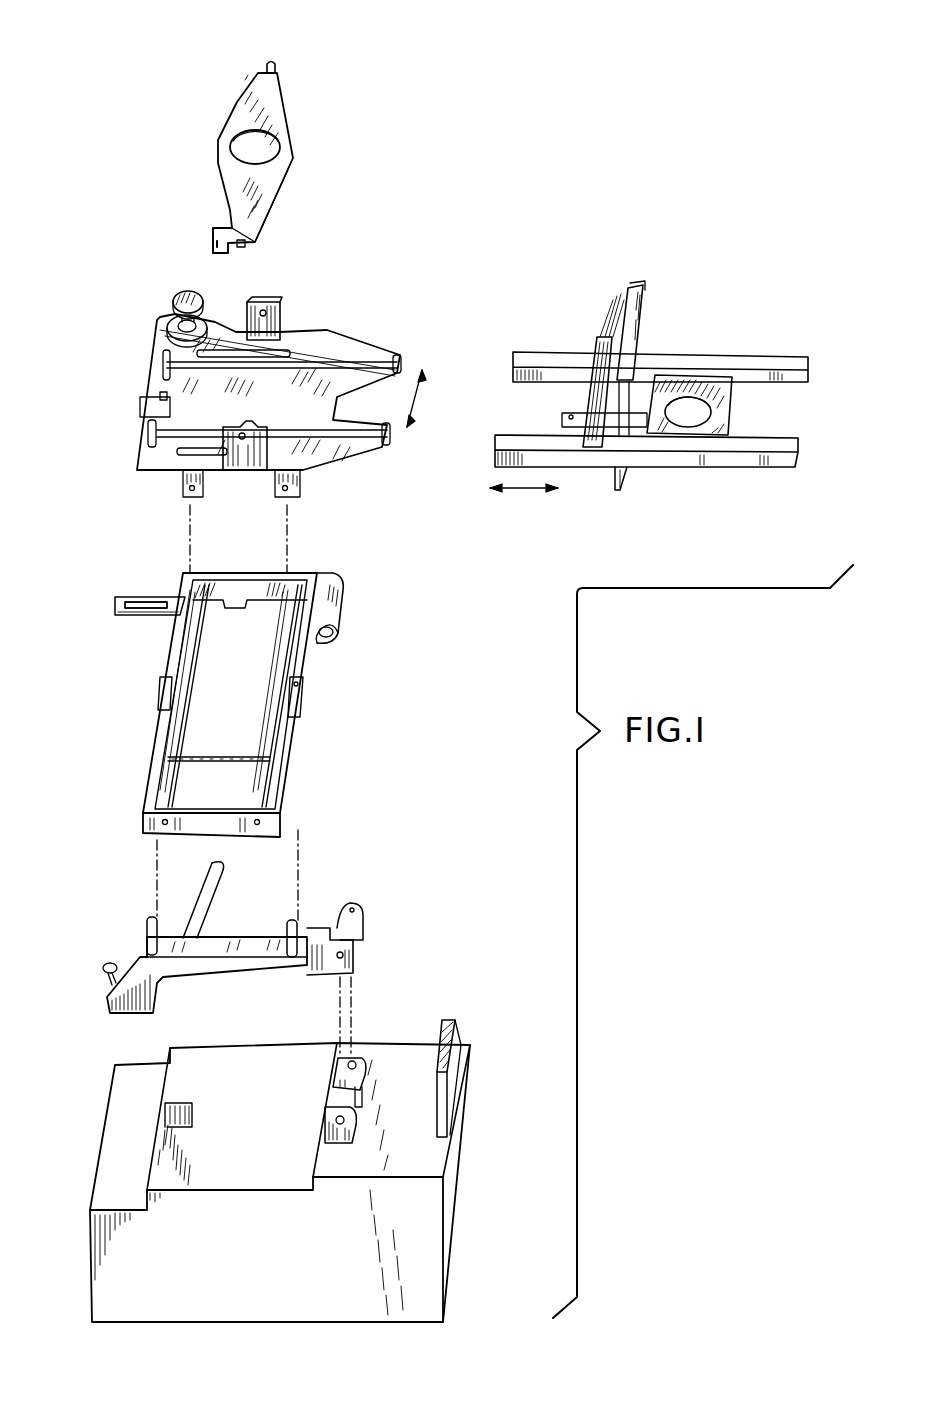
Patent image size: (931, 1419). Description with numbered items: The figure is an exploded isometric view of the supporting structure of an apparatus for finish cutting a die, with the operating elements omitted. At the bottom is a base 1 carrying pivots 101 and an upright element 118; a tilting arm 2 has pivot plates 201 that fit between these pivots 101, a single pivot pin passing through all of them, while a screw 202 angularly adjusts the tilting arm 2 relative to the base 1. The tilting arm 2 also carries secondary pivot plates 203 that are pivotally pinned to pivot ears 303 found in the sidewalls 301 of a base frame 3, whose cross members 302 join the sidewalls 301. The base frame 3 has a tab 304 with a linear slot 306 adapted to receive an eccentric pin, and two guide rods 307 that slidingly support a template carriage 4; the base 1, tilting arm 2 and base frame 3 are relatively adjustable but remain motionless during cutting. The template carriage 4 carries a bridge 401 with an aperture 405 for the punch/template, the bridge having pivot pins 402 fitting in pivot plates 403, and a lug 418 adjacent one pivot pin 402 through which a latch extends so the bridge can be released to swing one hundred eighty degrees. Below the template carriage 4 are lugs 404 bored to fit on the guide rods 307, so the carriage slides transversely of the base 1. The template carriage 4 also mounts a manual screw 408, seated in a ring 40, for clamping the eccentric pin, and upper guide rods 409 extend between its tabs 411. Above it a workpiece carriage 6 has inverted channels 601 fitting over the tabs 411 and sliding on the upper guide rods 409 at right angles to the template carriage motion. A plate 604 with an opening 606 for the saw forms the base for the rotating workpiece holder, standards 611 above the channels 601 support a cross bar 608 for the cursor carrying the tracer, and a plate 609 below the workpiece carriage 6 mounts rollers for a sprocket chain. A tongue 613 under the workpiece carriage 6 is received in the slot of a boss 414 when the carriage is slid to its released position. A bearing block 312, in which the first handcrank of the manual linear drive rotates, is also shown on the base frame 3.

The base 1 is at (267, 1272).
The pivots 101 is at (332, 1120).
The upright plate 118 is at (458, 1032).
The tilting arm 2 is at (363, 902).
The pivot plates 201 is at (352, 955).
The screw 202 is at (103, 968).
The secondary pivot plates 203 is at (293, 922).
The base frame 3 is at (333, 680).
The sidewalls 301 is at (152, 770).
The frame cross members 302 is at (243, 583).
The pivot ears 303 is at (160, 693).
The tab 304 is at (117, 603).
The linear slot 306 is at (140, 600).
The guide rods 307 is at (278, 670).
The bearing block 312 is at (342, 600).
The template carriage 4 is at (347, 320).
The bearing ring 40 is at (172, 330).
The bridge 401 is at (278, 92).
The pivot pins 402 is at (273, 66).
The pivot plates 403 is at (282, 313).
The lugs 404 is at (188, 488).
The aperture 405 is at (282, 146).
The manual screw 408 is at (175, 293).
The upper guide rods 409 is at (293, 430).
The tabs 411 is at (163, 365).
The boss 414 is at (142, 403).
The lug 418 is at (218, 232).
The workpiece carriage 6 is at (710, 333).
The inverted channels 601 is at (807, 387).
The plate 604 is at (720, 380).
The opening 606 is at (713, 413).
The cross bar 608 is at (633, 335).
The plate 609 is at (623, 478).
The standards 611 is at (590, 387).
The tongue 613 is at (567, 417).